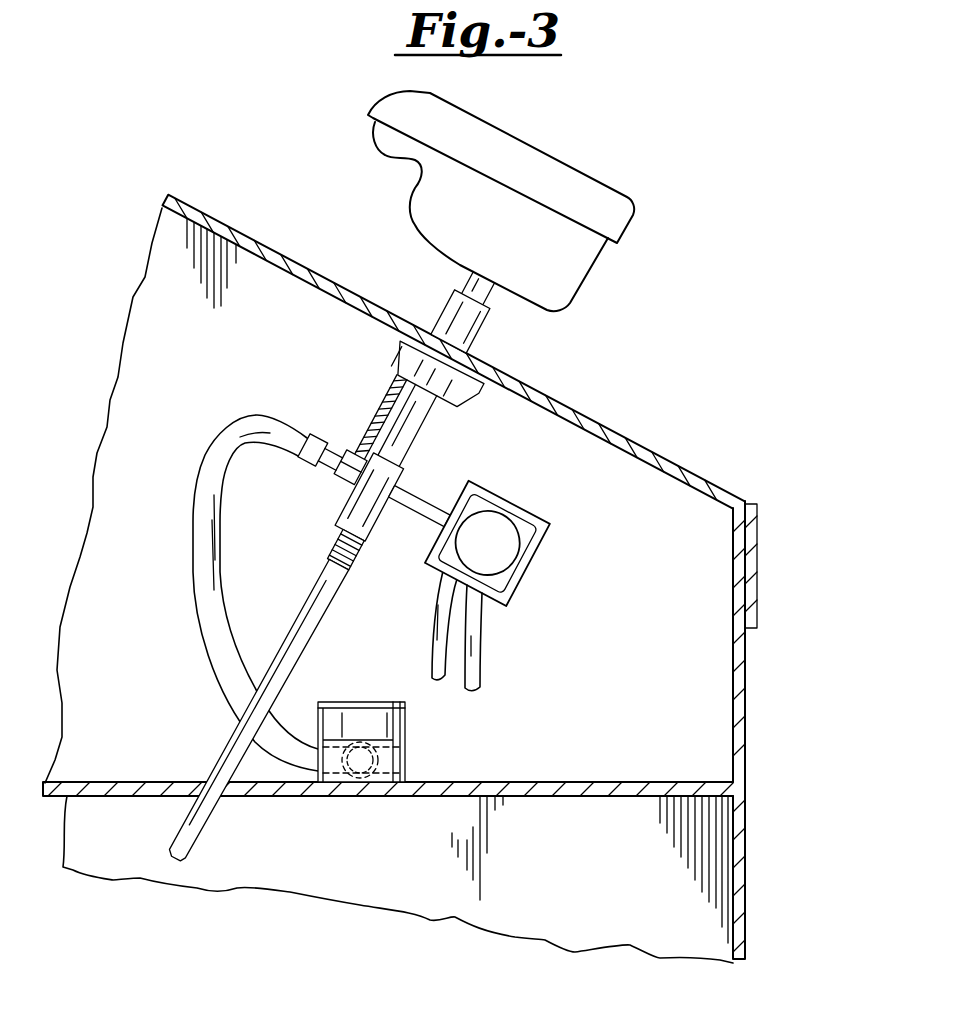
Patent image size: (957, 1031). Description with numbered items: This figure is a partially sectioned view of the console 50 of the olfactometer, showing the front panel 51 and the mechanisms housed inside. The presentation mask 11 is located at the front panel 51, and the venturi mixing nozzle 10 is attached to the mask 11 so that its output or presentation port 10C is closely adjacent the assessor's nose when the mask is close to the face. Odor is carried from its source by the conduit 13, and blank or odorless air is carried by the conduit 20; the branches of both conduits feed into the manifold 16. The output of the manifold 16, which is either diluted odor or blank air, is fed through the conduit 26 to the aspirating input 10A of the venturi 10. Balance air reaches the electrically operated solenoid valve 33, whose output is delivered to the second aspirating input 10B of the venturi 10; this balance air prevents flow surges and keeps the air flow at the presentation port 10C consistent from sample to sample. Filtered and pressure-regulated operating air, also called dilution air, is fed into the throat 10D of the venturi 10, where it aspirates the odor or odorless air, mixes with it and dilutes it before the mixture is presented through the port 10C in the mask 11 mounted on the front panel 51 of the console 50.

The venturi mixing nozzle 10 is at (310, 572).
The aspirating input 10A is at (388, 461).
The second aspirating input 10B is at (332, 458).
The presentation port 10C is at (429, 386).
The throat 10D is at (265, 697).
The presentation mask 11 is at (593, 287).
The conduit 13 is at (483, 648).
The manifold 16 is at (553, 560).
The conduit 20 is at (432, 640).
The conduit 26 is at (423, 493).
The solenoid valve 33 is at (405, 770).
The console 50 is at (744, 466).
The front panel 51 is at (573, 410).